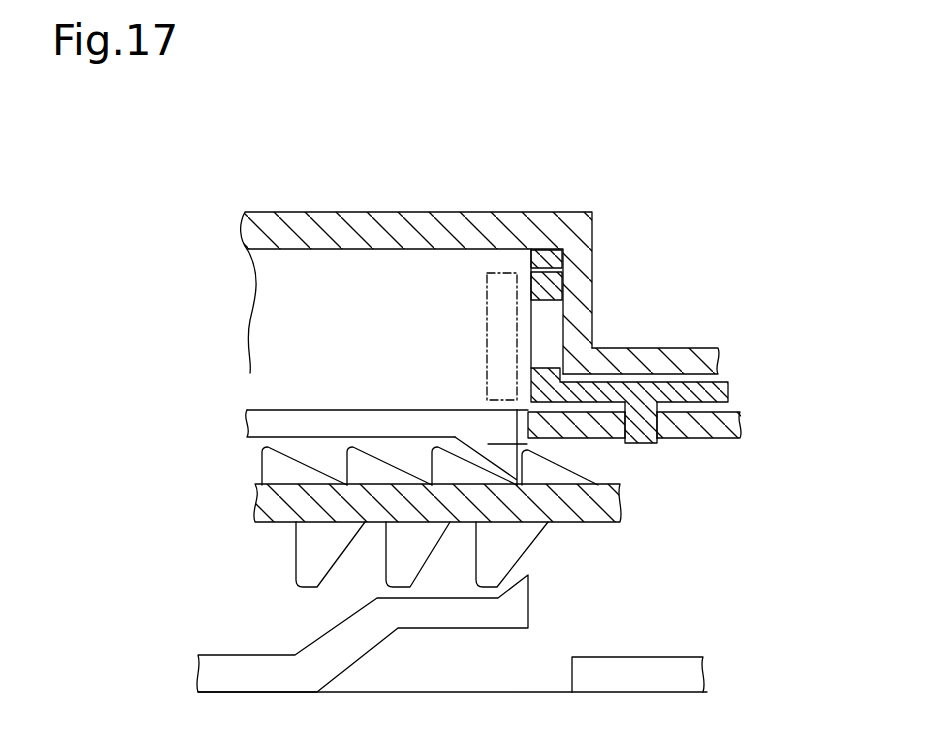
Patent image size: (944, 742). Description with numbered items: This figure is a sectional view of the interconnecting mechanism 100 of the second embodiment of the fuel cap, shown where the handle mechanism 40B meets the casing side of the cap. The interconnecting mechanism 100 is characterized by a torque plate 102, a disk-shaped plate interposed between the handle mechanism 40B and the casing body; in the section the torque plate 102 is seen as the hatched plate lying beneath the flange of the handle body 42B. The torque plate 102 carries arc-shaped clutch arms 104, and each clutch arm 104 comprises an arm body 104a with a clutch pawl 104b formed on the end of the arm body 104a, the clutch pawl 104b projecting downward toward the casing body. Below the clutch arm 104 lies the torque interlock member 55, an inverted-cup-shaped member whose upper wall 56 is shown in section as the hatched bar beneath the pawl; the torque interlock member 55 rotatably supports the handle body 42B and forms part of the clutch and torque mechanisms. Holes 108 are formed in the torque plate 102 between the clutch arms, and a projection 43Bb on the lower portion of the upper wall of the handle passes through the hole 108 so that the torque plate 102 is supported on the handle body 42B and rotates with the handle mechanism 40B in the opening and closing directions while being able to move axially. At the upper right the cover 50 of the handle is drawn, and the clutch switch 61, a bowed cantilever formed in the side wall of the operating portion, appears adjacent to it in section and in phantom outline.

The housing cover 50 is at (538, 212).
The clutch switch 61 is at (490, 308).
The handle mechanism 40B is at (688, 382).
The handle body 42B is at (718, 370).
The projection 43Bb is at (650, 446).
The torque plate 102 is at (679, 438).
The hole 108 is at (648, 443).
The interconnecting mechanism 100 is at (404, 425).
The clutch arm 104 is at (453, 428).
The arm body 104a is at (327, 420).
The clutch pawl 104b is at (522, 447).
The torque interlock member 55 is at (533, 517).
The upper wall 56 is at (620, 512).